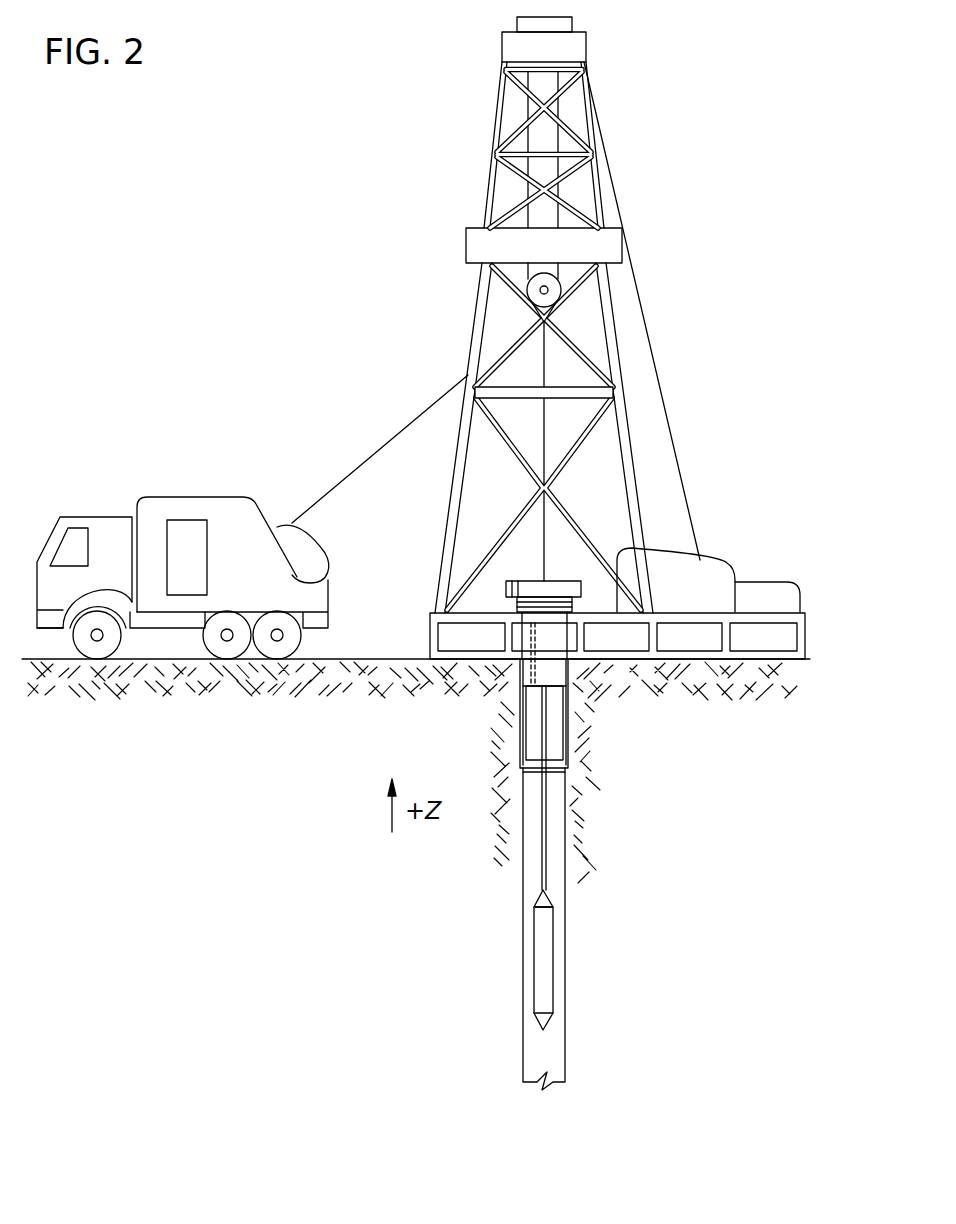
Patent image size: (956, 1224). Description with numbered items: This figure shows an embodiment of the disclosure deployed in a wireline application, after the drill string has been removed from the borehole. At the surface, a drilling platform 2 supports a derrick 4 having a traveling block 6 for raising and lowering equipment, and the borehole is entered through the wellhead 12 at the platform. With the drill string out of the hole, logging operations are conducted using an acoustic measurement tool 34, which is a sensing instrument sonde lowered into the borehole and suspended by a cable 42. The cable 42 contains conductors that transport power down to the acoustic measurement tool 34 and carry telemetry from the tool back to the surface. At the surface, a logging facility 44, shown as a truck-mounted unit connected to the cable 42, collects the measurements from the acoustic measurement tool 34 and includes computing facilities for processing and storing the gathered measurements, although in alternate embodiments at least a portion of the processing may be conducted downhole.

The drilling platform 2 is at (807, 633).
The derrick 4 is at (487, 188).
The traveling block 6 is at (530, 290).
The wellhead 12 is at (520, 580).
The acoustic measurement tool 34 is at (553, 918).
The cable 42 is at (428, 405).
The logging facility 44 is at (163, 495).